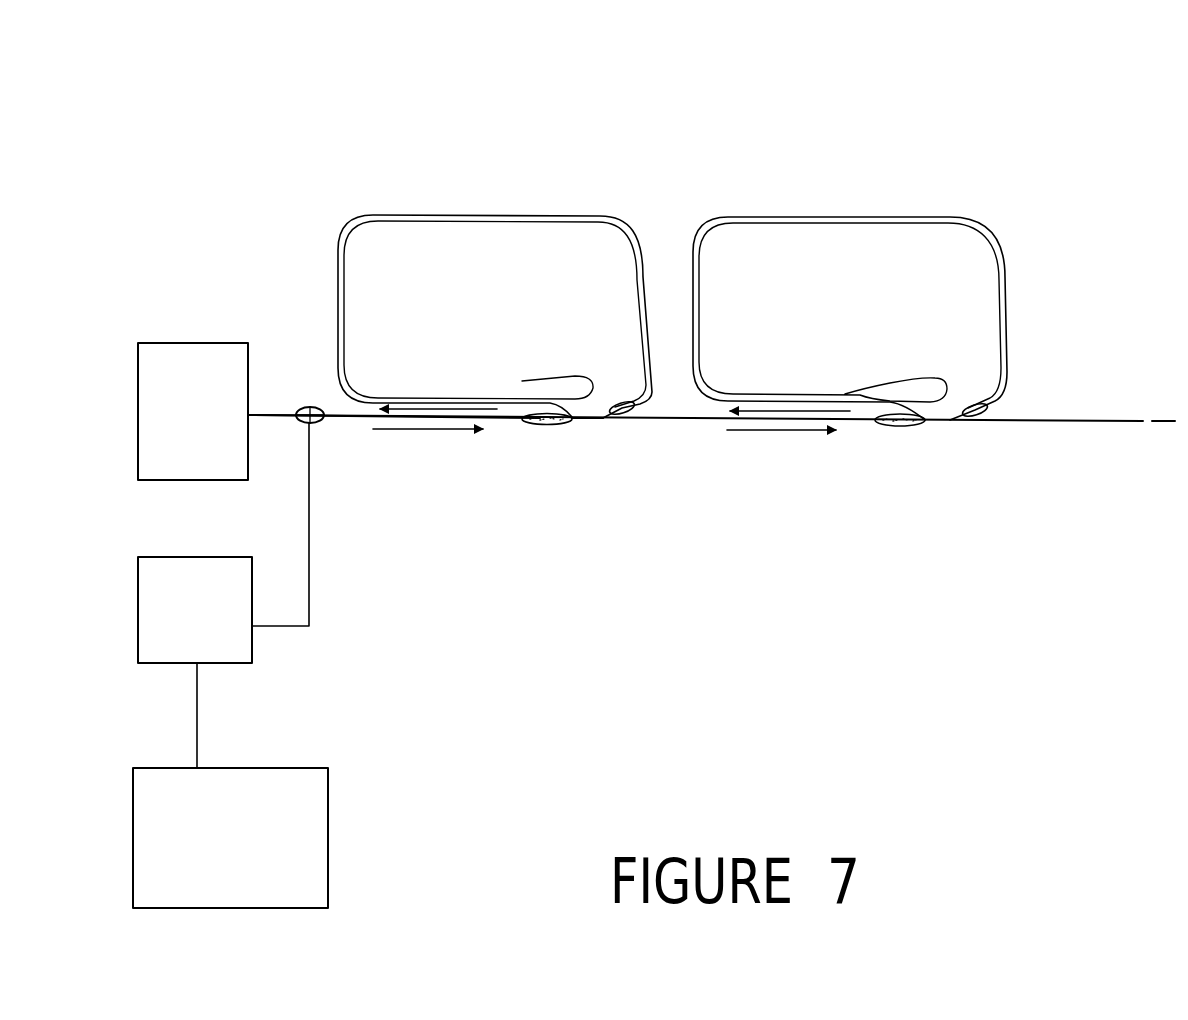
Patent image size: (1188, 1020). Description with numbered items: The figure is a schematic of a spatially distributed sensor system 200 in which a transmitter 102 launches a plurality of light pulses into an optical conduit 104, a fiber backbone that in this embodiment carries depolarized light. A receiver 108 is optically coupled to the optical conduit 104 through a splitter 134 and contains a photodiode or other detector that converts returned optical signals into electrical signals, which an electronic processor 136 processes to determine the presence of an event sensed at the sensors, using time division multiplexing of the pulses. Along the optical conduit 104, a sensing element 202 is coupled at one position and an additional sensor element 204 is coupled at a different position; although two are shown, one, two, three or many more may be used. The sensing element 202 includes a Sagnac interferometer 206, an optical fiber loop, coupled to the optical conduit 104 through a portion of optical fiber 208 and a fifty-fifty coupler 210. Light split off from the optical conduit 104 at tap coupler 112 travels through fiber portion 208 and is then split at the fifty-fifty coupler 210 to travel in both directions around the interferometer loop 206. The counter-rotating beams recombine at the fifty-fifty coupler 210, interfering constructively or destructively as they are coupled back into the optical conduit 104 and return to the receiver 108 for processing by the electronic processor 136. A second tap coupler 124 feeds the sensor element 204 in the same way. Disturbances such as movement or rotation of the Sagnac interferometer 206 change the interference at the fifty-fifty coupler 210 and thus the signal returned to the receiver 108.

The spatially distributed sensor system 200 is at (1007, 108).
The transmitter 102 is at (198, 343).
The optical conduit 104 is at (347, 420).
The receiver 108 is at (252, 650).
The tap coupler 112 is at (540, 425).
The tap coupler 124 is at (903, 426).
The splitter 134 is at (310, 408).
The electronic processor 136 is at (328, 830).
The sensing element 202 is at (506, 280).
The sensor element 204 is at (850, 299).
The Sagnac interferometer 206 is at (372, 222).
The portion of optical fiber 208 is at (598, 420).
The 50/50 coupler 210 is at (636, 422).